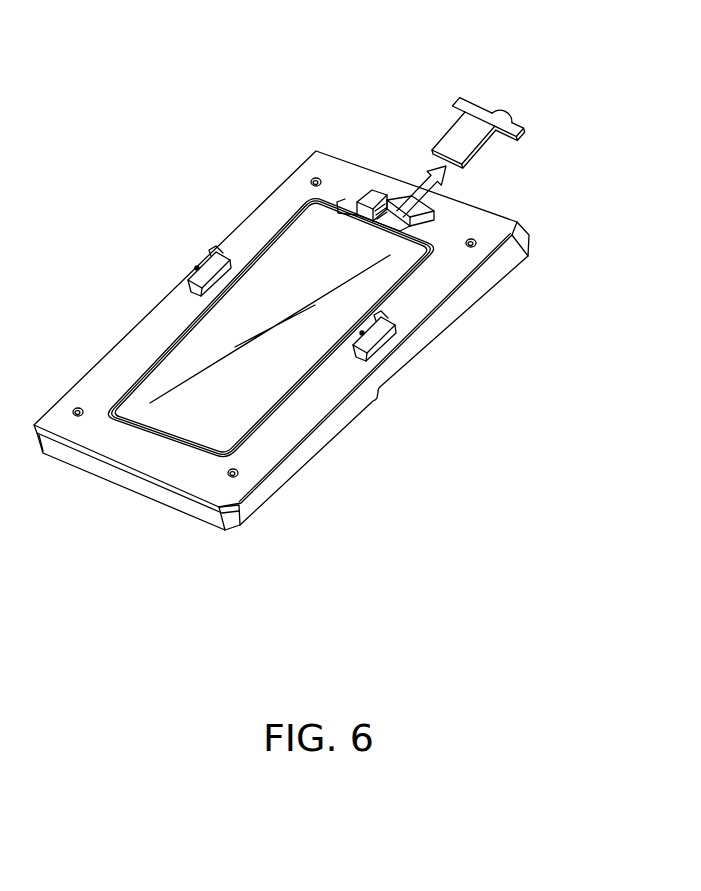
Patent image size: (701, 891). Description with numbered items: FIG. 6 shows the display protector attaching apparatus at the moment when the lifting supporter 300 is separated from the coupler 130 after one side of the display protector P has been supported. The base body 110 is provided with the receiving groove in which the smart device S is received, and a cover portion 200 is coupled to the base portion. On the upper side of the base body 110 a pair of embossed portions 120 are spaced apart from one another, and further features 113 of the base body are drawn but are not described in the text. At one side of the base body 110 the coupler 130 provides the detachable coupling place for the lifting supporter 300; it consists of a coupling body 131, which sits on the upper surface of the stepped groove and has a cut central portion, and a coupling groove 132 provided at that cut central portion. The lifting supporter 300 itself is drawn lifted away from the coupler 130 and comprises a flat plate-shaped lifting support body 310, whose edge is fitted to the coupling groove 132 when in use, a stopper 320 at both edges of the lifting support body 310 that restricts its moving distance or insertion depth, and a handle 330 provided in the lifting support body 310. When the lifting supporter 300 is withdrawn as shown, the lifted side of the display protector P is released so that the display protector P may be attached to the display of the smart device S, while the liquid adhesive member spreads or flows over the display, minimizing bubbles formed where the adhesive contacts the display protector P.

The base body 110 is at (380, 383).
The fastening hole 113 is at (312, 179).
The embossed portions 120 is at (212, 258).
The coupler 130 is at (379, 125).
The coupling body 131 is at (371, 197).
The coupling groove 132 is at (397, 197).
The cover portion 200 is at (280, 434).
The display protector P is at (163, 382).
The smart device S is at (352, 214).
The lifting supporter 300 is at (516, 92).
The lifting support body 310 is at (452, 140).
The stopper 320 is at (470, 103).
The handle 330 is at (500, 103).